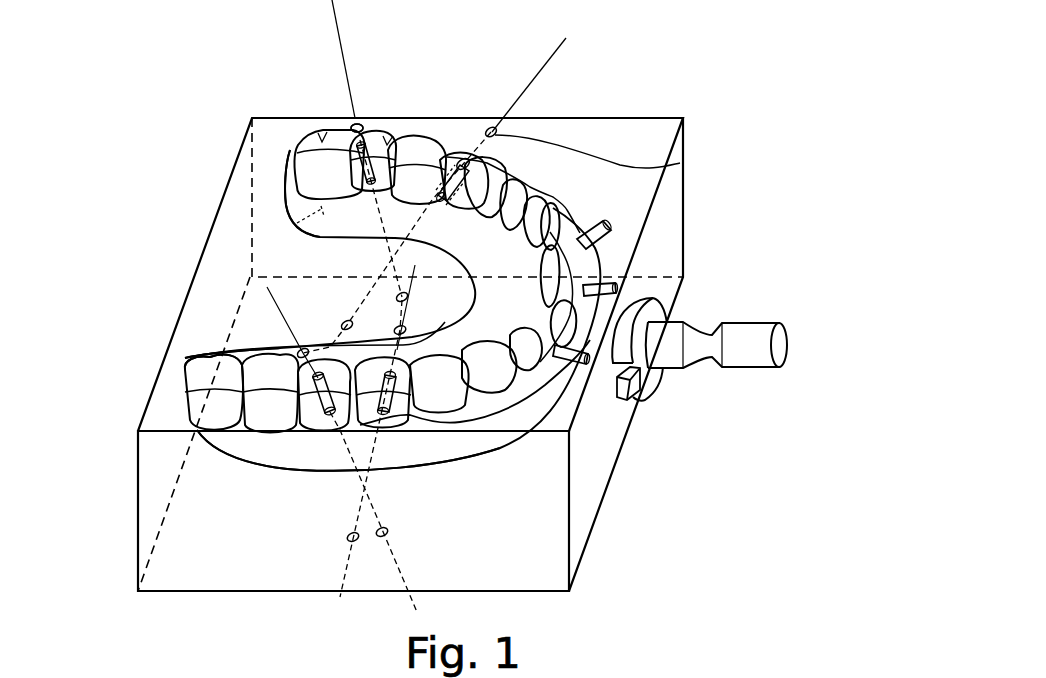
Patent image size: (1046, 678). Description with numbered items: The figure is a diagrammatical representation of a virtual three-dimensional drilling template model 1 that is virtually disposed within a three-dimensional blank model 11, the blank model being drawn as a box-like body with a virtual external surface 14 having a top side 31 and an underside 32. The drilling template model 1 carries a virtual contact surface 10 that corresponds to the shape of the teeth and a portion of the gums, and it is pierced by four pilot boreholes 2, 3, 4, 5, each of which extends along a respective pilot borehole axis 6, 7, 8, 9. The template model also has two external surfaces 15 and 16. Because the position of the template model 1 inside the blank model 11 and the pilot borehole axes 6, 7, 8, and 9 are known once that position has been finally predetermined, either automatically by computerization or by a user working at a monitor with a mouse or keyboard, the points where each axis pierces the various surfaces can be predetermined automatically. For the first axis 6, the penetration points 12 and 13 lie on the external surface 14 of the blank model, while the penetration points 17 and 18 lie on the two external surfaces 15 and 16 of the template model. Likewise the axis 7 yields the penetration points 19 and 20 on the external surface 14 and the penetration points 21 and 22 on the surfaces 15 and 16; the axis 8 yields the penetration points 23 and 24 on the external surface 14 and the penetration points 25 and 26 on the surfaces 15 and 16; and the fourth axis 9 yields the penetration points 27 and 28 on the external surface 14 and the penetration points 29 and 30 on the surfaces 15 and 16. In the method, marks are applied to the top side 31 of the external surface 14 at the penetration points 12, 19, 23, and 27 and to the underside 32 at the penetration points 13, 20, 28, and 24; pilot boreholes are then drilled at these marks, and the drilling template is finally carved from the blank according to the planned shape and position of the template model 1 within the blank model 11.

The virtual 3D drilling template model 1 is at (573, 213).
The pilot borehole 2 is at (360, 123).
The pilot borehole 3 is at (463, 163).
The pilot borehole 4 is at (243, 427).
The pilot borehole 5 is at (262, 428).
The pilot borehole axis 6 is at (343, 67).
The pilot borehole axis 7 is at (538, 72).
The pilot borehole axis 8 is at (330, 420).
The pilot borehole axis 9 is at (393, 557).
The virtual contact surface 10 is at (313, 123).
The 3D blank model 11 is at (587, 463).
The penetration point 12 is at (357, 128).
The penetration point 13 is at (396, 295).
The virtual external surface 14 is at (554, 135).
The external surface 15 is at (390, 127).
The external surface 16 is at (313, 223).
The penetration point 17 is at (360, 127).
The penetration point 18 is at (310, 187).
The penetration point 19 is at (490, 130).
The penetration point 20 is at (345, 323).
The penetration point 21 is at (680, 163).
The penetration point 22 is at (563, 210).
The penetration point 23 is at (620, 397).
The penetration point 24 is at (353, 542).
The penetration point 25 is at (445, 322).
The penetration point 26 is at (335, 432).
The penetration point 27 is at (305, 343).
The penetration point 28 is at (387, 530).
The penetration point 29 is at (228, 416).
The penetration point 30 is at (300, 432).
The top side 31 is at (648, 140).
The underside 32 is at (536, 573).